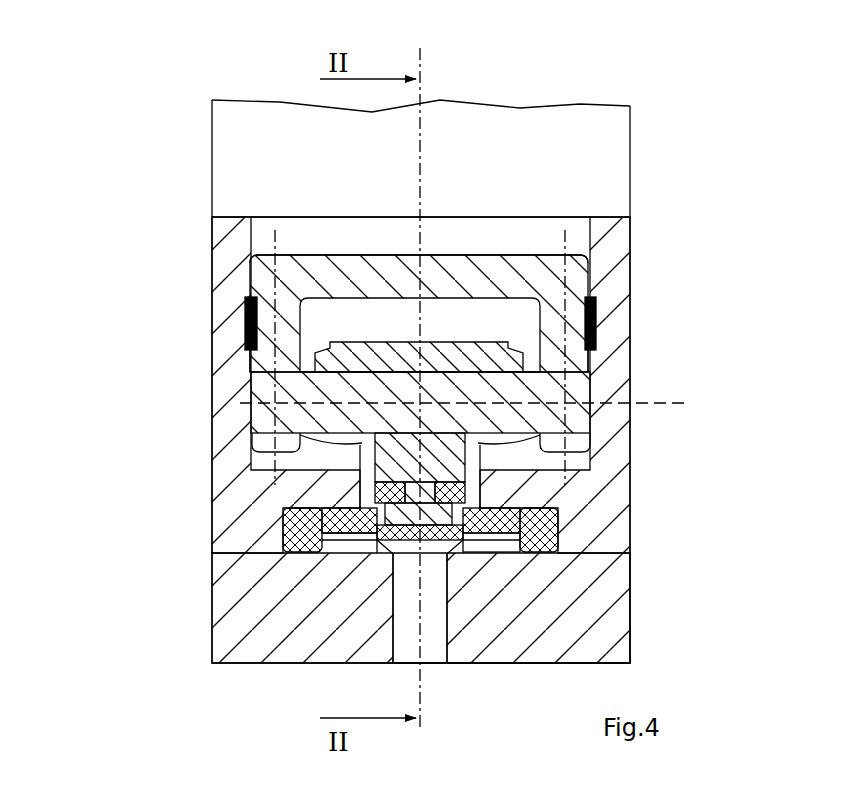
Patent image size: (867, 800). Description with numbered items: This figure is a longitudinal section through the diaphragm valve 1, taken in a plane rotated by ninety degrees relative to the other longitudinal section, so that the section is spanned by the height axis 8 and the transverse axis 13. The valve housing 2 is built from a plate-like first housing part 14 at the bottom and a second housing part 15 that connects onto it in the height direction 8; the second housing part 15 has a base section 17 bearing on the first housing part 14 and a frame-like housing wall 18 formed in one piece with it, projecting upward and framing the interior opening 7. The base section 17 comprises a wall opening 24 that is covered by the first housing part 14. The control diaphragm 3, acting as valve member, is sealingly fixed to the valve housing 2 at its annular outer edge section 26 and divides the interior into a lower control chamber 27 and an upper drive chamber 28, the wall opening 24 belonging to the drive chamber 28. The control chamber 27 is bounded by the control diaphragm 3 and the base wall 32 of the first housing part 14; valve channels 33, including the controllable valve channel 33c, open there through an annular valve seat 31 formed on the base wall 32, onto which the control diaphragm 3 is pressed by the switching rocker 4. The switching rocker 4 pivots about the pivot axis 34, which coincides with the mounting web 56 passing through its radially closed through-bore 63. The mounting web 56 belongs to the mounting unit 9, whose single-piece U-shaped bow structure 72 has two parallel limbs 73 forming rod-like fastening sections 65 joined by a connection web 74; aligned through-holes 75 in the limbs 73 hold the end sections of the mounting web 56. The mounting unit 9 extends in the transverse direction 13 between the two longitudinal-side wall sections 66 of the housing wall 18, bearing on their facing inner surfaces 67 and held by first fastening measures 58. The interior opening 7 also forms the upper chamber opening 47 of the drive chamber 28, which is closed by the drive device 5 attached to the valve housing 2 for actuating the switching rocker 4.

The diaphragm valve 1 is at (624, 80).
The valve housing 2 is at (624, 620).
The control diaphragm 3 is at (375, 530).
The switching rocker 4 is at (437, 360).
The drive device 5 is at (212, 170).
The interior opening 7 is at (493, 200).
The upper chamber opening 47 is at (590, 218).
The height axis 8 is at (422, 70).
The mounting unit 9 is at (478, 256).
The transverse axis 13 is at (382, 377).
The pivot axis 34 is at (183, 396).
The first housing part 14 is at (220, 600).
The second housing part 15 is at (215, 466).
The base section 17 is at (572, 531).
The housing wall 18 is at (612, 373).
The wall opening 24 is at (495, 497).
The outer edge section 26 is at (305, 528).
The control chamber 27 is at (342, 540).
The drive chamber 28 is at (553, 243).
The valve seat 31 is at (440, 524).
The base wall 32 is at (495, 617).
The valve channel 33 is at (451, 702).
The controllable valve channel 33c is at (437, 648).
The mounting web 56 is at (380, 385).
The first fastening measures 58 is at (248, 318).
The through-bore 63 is at (492, 373).
The fastening section 65 is at (413, 349).
The limb 73 is at (257, 360).
The longitudinal-side wall section 66 is at (413, 386).
The inner surface 67 is at (256, 272).
The bow structure 72 is at (413, 265).
The connection web 74 is at (462, 270).
The through-hole 75 is at (247, 417).